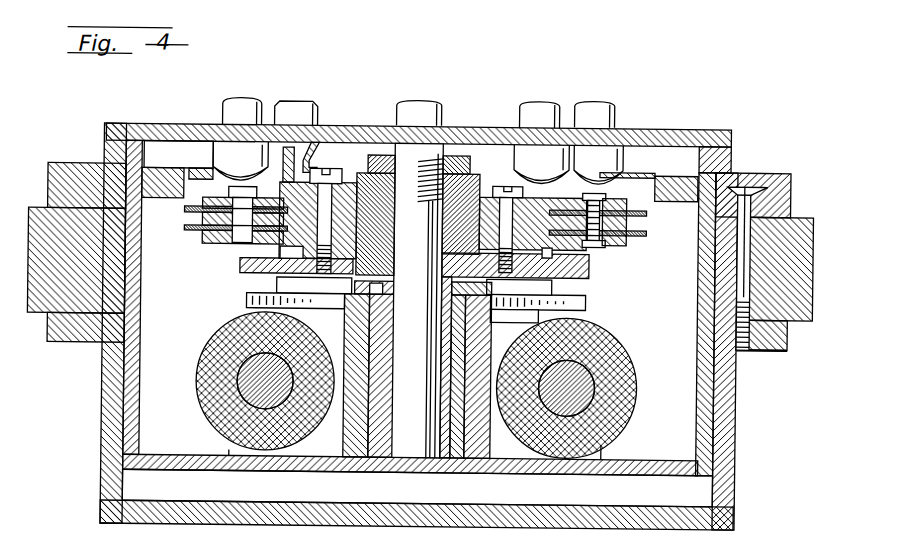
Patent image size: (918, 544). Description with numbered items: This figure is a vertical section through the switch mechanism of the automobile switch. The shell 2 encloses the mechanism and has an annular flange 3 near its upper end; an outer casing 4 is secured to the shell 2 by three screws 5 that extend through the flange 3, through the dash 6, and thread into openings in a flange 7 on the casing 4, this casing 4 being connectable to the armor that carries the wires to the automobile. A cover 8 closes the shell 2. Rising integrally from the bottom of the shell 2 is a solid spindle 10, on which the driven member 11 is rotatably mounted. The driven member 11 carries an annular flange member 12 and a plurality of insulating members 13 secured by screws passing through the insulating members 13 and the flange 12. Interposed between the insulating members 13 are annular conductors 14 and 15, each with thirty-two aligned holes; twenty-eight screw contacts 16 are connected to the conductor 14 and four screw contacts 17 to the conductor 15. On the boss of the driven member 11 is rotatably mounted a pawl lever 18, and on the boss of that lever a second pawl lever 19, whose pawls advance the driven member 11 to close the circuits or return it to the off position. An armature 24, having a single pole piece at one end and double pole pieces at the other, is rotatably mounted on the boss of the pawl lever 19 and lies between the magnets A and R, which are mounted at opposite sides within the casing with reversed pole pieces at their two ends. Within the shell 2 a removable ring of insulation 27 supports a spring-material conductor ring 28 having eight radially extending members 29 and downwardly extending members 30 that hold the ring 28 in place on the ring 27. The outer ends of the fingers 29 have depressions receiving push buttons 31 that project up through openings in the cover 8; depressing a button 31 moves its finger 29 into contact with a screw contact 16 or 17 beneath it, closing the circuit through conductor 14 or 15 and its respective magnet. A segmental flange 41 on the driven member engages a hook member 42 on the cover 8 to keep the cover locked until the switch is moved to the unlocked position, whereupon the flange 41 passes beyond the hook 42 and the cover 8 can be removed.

The shell 2 is at (695, 272).
The annular flange 3 is at (759, 188).
The outer casing 4 is at (735, 466).
The screws 5 is at (785, 198).
The dash 6 is at (787, 316).
The flange 7 is at (773, 340).
The cover 8 is at (724, 126).
The spindle 10 is at (418, 300).
The driven member 11 is at (485, 185).
The annular flange member 12 is at (240, 264).
The insulating members 13 is at (643, 207).
The annular conductor 14 is at (181, 207).
The annular conductor 15 is at (181, 228).
The screw contacts 16 is at (226, 190).
The screw contacts 17 is at (606, 187).
The pawl lever 18 is at (546, 285).
The second pawl lever 19 is at (276, 285).
The armature 24 is at (244, 296).
The ring of insulation 27 is at (136, 172).
The conductor ring 28 is at (148, 167).
The radially extending members 29 is at (196, 164).
The downwardly extending members 30 is at (178, 154).
The push buttons 31 is at (238, 97).
The segmental flange 41 is at (283, 96).
The hook member 42 is at (318, 152).
The magnet R is at (198, 354).
The magnet A is at (631, 344).